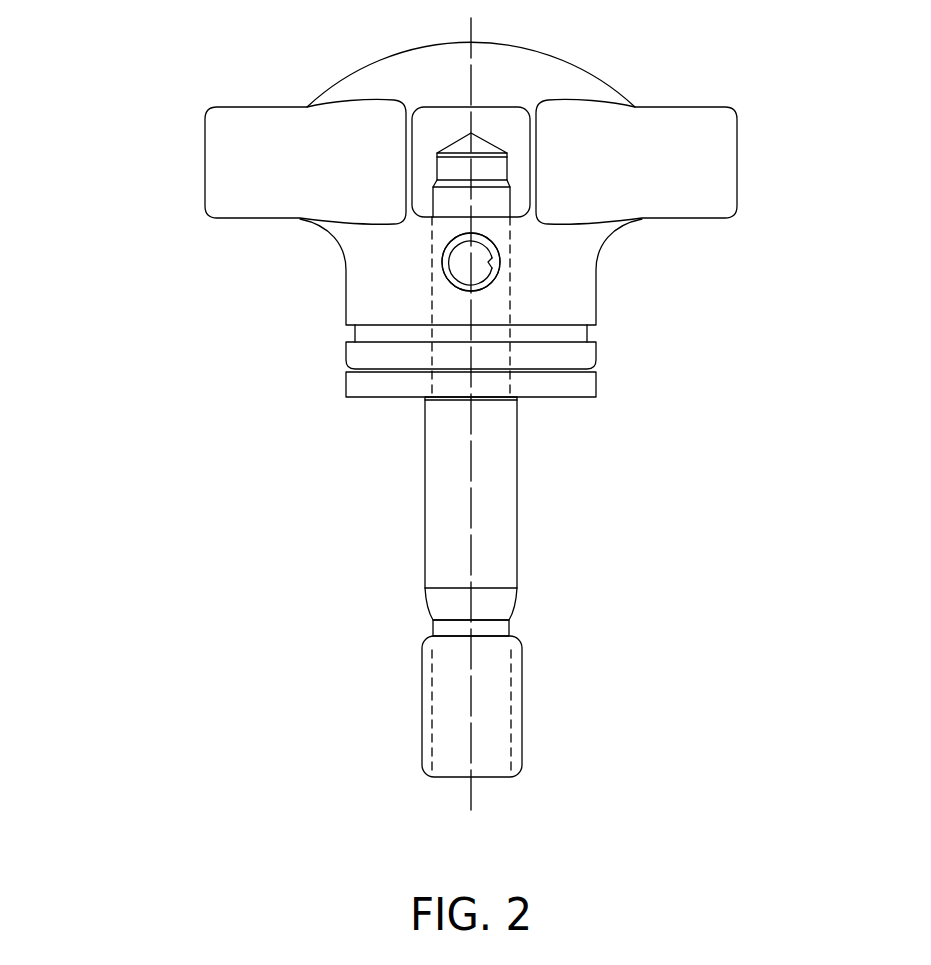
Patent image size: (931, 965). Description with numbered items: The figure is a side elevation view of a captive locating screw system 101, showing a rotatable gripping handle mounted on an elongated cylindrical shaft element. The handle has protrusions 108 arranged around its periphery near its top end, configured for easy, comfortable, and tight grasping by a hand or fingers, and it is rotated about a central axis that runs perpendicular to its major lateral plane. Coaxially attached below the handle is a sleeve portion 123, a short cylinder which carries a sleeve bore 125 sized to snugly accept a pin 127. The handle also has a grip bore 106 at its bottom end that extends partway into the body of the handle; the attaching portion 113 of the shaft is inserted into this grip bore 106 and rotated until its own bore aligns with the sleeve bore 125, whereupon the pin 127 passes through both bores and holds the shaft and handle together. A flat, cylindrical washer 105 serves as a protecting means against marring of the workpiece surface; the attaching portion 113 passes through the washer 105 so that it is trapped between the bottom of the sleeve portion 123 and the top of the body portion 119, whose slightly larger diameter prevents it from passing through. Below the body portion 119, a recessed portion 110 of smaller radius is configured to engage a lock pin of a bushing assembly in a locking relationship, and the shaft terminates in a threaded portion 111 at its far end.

The captive locating screw system 101 is at (155, 42).
The protrusions 108 is at (232, 171).
The attaching portion 113 is at (500, 256).
The pin 127 is at (487, 233).
The sleeve bore 125 is at (463, 266).
The sleeve portion 123 is at (596, 322).
The washer 105 is at (585, 389).
The grip bore 106 is at (433, 372).
The body portion 119 is at (517, 553).
The recessed portion 110 is at (428, 610).
The threaded portion 111 is at (522, 693).